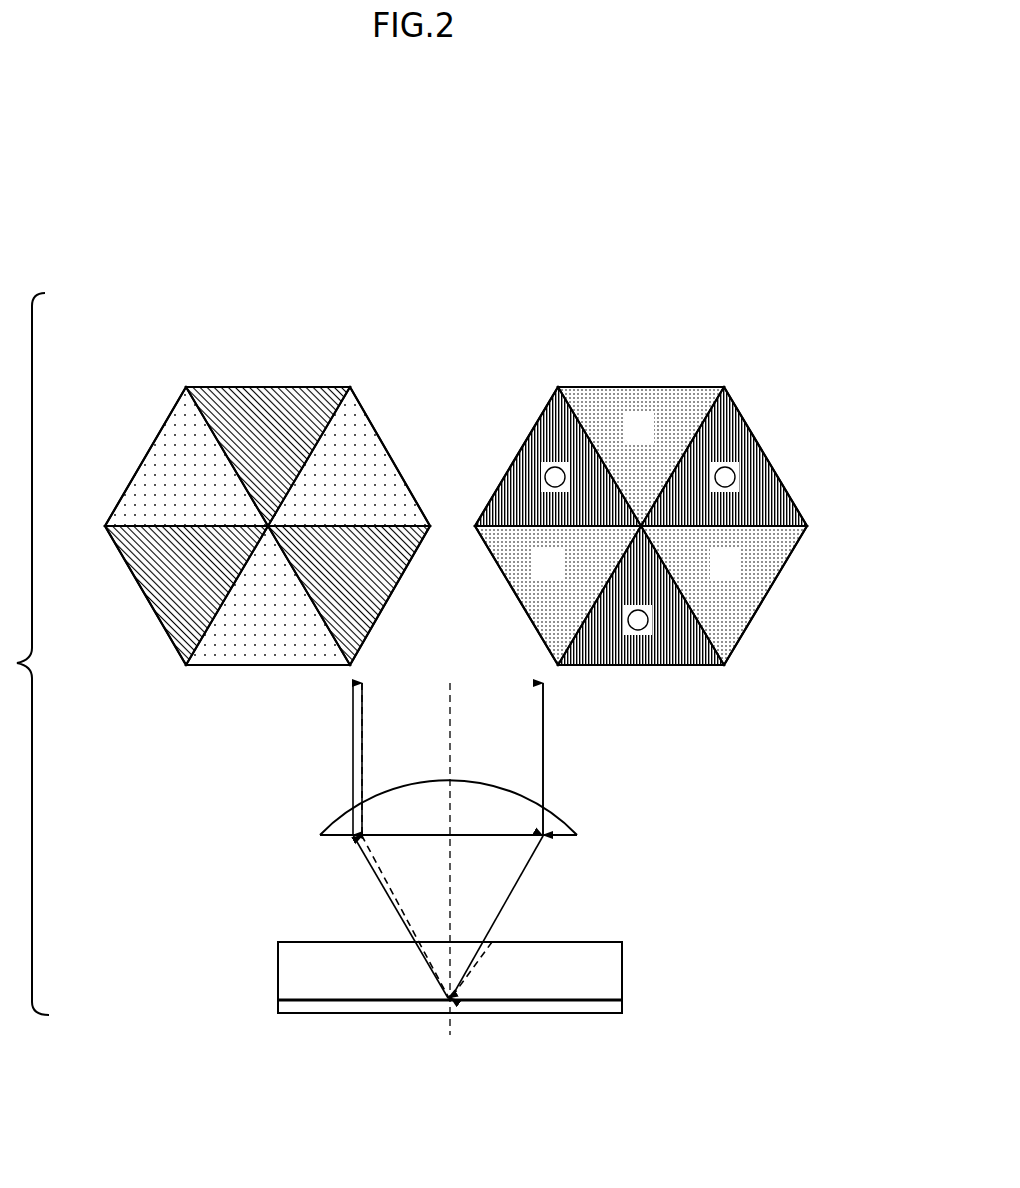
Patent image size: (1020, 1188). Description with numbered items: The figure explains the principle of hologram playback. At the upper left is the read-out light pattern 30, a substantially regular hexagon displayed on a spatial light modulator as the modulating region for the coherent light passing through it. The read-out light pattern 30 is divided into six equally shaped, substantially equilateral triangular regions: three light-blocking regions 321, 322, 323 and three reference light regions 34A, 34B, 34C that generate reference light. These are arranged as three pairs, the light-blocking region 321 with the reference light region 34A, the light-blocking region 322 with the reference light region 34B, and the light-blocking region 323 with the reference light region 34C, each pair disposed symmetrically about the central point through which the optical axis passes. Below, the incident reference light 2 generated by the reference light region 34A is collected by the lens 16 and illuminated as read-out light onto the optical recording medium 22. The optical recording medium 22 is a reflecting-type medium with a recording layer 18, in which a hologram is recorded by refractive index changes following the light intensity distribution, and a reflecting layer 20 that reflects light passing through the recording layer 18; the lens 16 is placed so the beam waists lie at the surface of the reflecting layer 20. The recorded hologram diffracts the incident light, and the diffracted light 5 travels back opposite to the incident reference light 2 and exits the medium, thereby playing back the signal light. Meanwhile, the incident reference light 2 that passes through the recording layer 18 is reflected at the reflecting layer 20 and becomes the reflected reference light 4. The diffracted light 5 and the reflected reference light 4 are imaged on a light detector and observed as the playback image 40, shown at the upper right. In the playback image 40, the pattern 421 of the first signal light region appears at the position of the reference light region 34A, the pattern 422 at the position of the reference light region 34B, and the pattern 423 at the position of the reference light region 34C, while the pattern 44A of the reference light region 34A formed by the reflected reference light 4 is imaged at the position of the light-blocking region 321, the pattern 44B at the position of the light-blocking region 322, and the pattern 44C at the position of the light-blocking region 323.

The incident reference light 2 is at (352, 739).
The reflected reference light 4 is at (510, 896).
The diffracted light 5 is at (389, 889).
The lens 16 is at (575, 828).
The recording layer 18 is at (622, 976).
The reflecting layer 20 is at (622, 1005).
The optical recording medium 22 is at (507, 981).
The read-out light pattern 30 is at (259, 505).
The light-blocking region 321 is at (389, 601).
The light-blocking region 322 is at (130, 578).
The light-blocking region 323 is at (241, 387).
The reference light region 34A is at (124, 490).
The reference light region 34B is at (388, 454).
The reference light region 34C is at (268, 624).
The playback image 40 is at (656, 506).
The pattern of the signal light region 421 is at (541, 418).
The pattern of the signal light region 422 is at (768, 448).
The pattern of the signal light region 423 is at (641, 626).
The pattern of the reference light region 44A is at (768, 598).
The pattern of the reference light region 44B is at (538, 631).
The pattern of the reference light region 44C is at (607, 387).